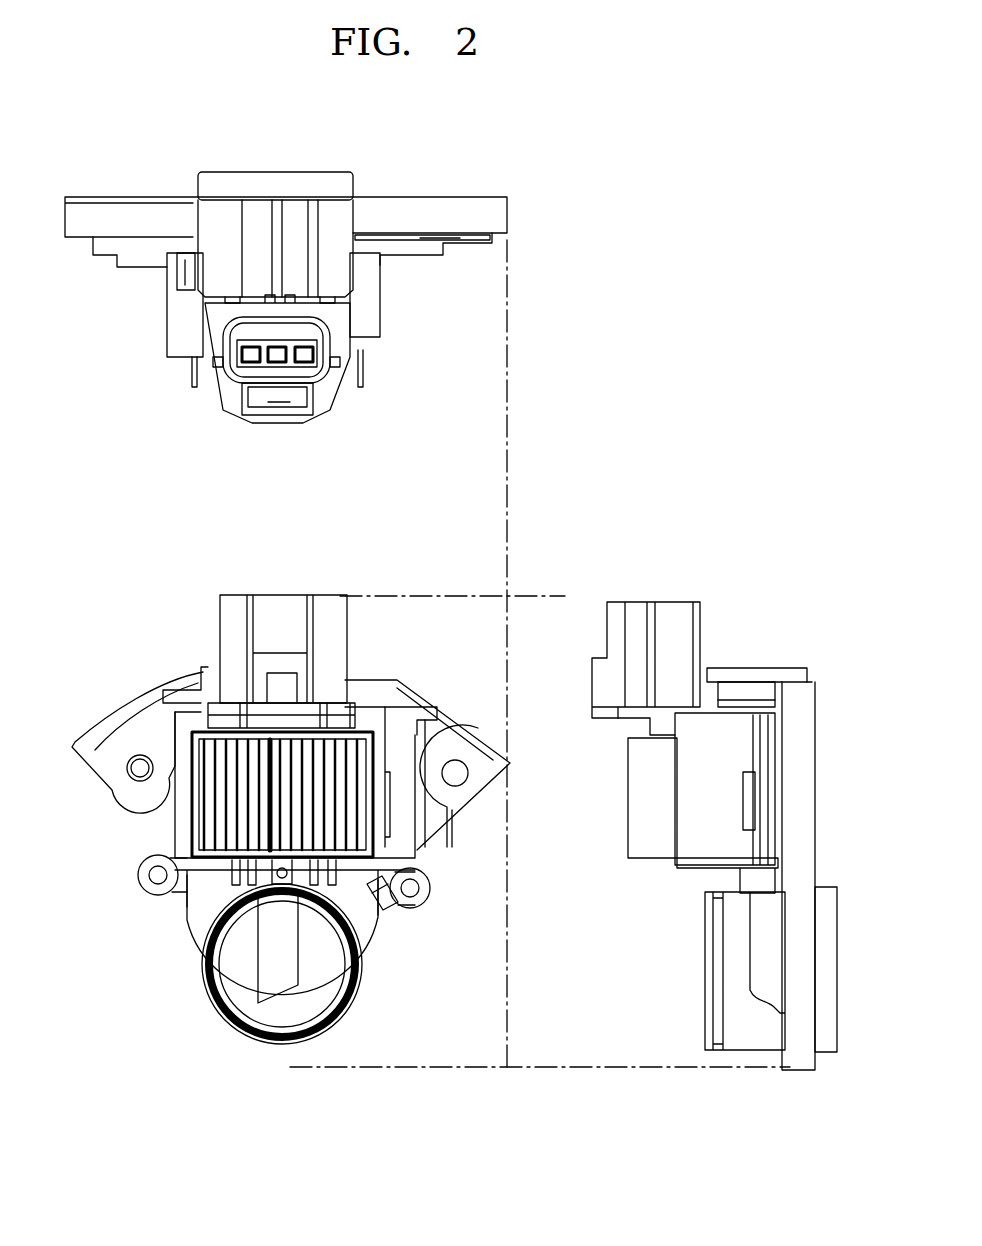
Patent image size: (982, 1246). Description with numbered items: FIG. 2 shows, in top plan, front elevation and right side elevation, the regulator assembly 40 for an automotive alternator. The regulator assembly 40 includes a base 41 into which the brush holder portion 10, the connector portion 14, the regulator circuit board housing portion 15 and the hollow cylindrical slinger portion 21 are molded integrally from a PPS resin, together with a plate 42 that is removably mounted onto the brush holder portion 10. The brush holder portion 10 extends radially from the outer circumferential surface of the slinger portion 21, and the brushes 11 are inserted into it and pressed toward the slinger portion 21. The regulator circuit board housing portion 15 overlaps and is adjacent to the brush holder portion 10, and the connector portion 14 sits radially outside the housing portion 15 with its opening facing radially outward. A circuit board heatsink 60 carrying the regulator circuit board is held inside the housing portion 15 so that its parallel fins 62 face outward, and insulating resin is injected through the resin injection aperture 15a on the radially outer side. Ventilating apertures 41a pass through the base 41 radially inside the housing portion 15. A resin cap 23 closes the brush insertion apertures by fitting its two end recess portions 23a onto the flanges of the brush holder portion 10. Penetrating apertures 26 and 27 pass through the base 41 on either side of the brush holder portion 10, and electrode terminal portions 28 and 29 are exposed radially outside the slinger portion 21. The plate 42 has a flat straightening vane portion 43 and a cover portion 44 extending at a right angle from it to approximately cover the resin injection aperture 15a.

The regulator assembly 40 is at (120, 130).
The slinger portion 21 is at (205, 186).
The plate 42 is at (472, 138).
The cover portion 44 is at (333, 226).
The straightening vane portion 43 is at (421, 212).
The base 41 is at (386, 303).
The ventilating apertures 41a is at (375, 916).
The regulator circuit board housing portion 15 is at (178, 333).
The resin injection aperture 15a is at (192, 285).
The brush holder portion 10 is at (300, 297).
The connector portion 14 is at (228, 378).
The circuit board heatsink 60 is at (183, 365).
The fins 62 is at (363, 372).
The penetrating aperture 26 is at (133, 773).
The penetrating aperture 27 is at (455, 774).
The electrode terminal portion 28 is at (155, 878).
The electrode terminal portion 29 is at (412, 888).
The brushes 11 is at (272, 968).
The resin cap 23 is at (752, 695).
The end recess portions 23a is at (738, 688).